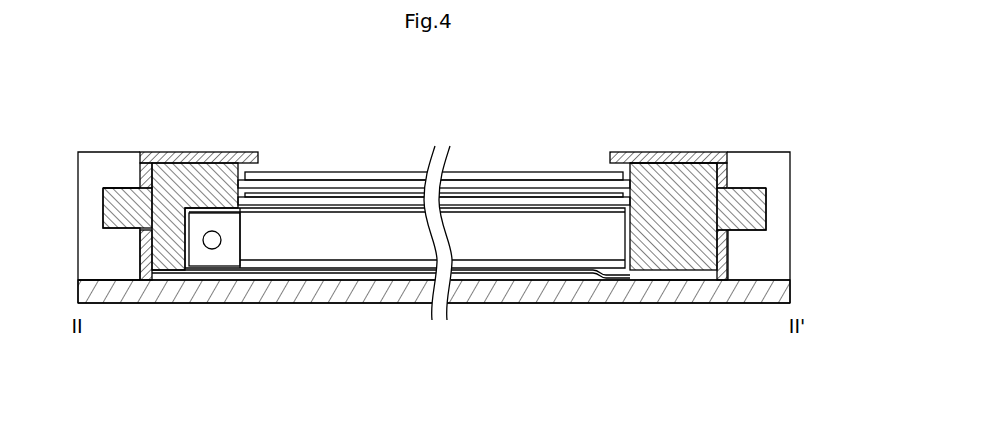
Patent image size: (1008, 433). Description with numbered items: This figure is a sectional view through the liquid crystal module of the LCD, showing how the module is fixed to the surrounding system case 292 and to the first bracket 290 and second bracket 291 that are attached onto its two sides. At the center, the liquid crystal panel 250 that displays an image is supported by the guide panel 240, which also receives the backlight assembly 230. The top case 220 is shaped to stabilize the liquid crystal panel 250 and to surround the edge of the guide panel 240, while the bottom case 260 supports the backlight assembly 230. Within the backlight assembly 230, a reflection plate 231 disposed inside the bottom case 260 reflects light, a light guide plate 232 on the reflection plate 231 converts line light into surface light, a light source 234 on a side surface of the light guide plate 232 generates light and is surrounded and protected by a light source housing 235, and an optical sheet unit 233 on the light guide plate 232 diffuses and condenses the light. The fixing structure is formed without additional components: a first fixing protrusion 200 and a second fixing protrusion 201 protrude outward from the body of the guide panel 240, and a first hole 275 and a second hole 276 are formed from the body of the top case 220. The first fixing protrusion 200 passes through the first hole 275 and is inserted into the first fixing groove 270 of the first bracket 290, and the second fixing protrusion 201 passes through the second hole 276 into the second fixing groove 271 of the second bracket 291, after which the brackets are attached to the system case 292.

The first fixing protrusion 200 is at (740, 192).
The second fixing protrusion 201 is at (121, 197).
The top case 220 is at (241, 153).
The backlight assembly 230 is at (392, 345).
The reflection plate 231 is at (385, 266).
The light guide plate 232 is at (352, 245).
The optical sheet unit 233 is at (305, 207).
The light source 234 is at (212, 250).
The light source housing 235 is at (245, 269).
The guide panel 240 is at (641, 266).
The liquid crystal panel 250 is at (536, 168).
The bottom case 260 is at (667, 282).
The first fixing groove 270 is at (762, 188).
The second fixing groove 271 is at (107, 187).
The first hole 275 is at (700, 166).
The second hole 276 is at (155, 196).
The first bracket 290 is at (790, 186).
The second bracket 291 is at (117, 268).
The system case 292 is at (788, 288).